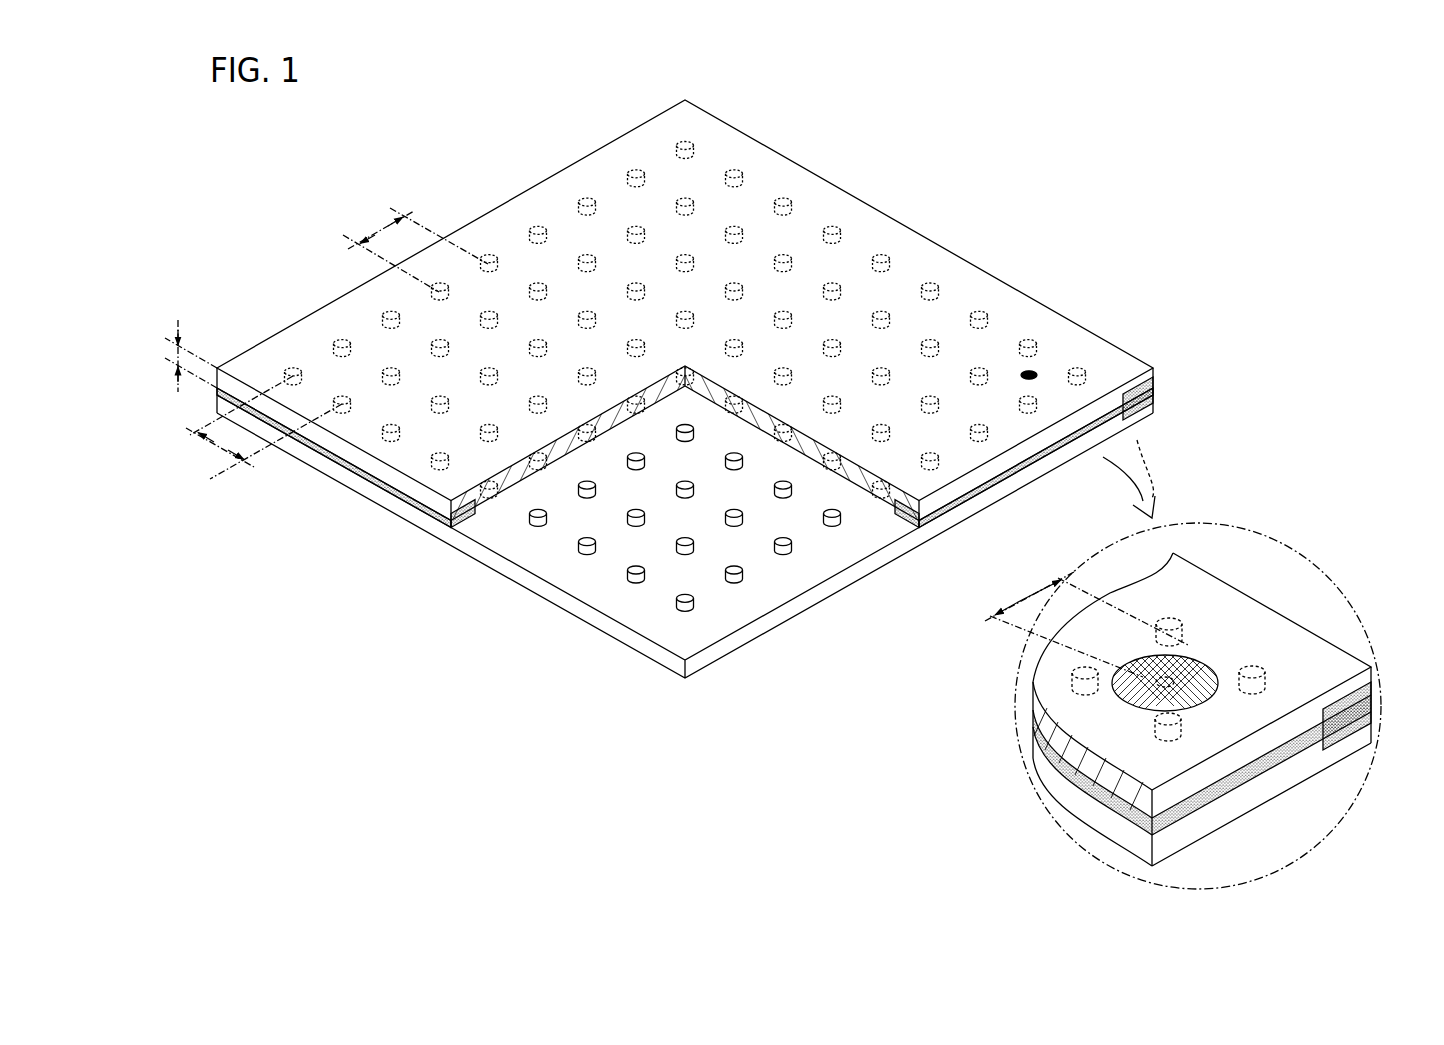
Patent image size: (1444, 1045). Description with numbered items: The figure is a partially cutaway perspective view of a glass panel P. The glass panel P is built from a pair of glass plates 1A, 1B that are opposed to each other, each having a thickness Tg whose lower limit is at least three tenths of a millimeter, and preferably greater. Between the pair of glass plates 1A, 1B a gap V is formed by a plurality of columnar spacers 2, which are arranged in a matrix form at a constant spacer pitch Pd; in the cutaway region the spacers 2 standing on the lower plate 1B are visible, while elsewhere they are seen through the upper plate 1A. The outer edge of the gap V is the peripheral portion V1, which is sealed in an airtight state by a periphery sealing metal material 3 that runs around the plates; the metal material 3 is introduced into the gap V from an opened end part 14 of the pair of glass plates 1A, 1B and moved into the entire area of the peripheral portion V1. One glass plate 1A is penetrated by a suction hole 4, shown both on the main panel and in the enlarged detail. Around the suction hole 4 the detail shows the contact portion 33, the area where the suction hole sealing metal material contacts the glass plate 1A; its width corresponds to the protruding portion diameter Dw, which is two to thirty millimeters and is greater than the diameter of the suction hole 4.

The glass panel P is at (994, 162).
The glass plate 1A is at (967, 297).
The glass plate 1B is at (562, 604).
The columnar spacers 2 is at (848, 230).
The periphery sealing metal material 3 is at (398, 496).
The suction hole 4 is at (1037, 368).
The opened end part 14 is at (1160, 391).
The contact portion 33 is at (1196, 690).
The gap V is at (507, 491).
The peripheral portion V1 is at (1013, 499).
The spacer pitch Pd is at (332, 340).
The thickness Tg is at (175, 350).
The protruding portion diameter Dw is at (1087, 624).